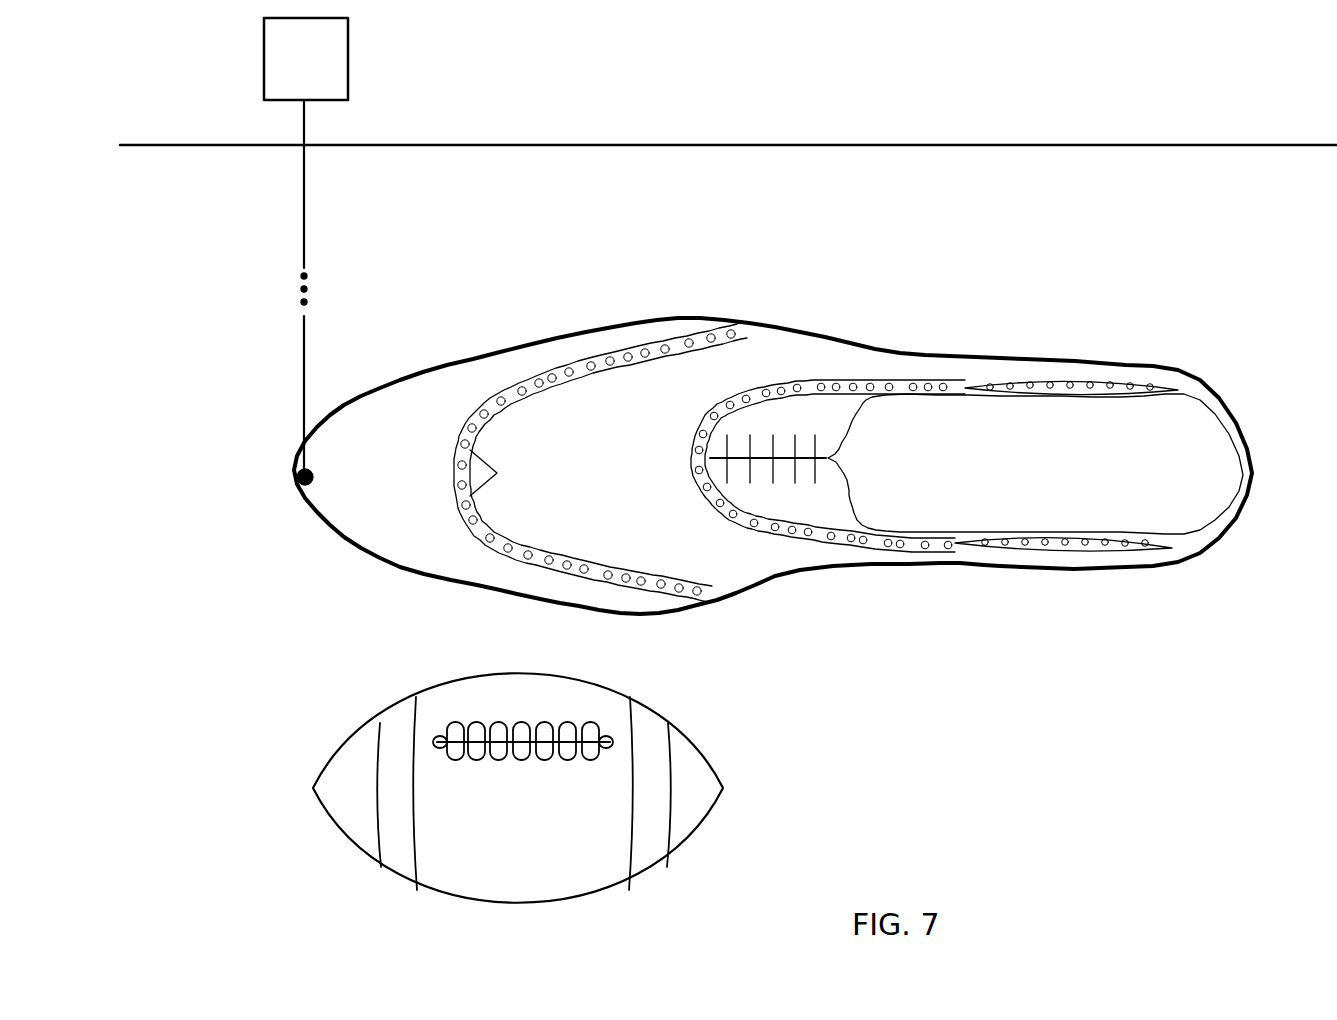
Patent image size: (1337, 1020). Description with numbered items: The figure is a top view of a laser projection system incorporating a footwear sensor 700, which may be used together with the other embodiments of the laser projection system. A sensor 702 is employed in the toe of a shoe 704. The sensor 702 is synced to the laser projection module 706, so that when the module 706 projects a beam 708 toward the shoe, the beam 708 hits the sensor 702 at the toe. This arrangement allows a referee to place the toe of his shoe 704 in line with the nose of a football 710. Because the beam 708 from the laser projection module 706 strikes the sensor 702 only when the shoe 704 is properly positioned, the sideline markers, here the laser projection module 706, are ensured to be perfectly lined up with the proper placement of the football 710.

The footwear sensor 700 is at (1116, 775).
The sensor 702 is at (298, 490).
The shoe 704 is at (703, 375).
The laser projection module 706 is at (287, 69).
The beam 708 is at (305, 372).
The football 710 is at (467, 835).